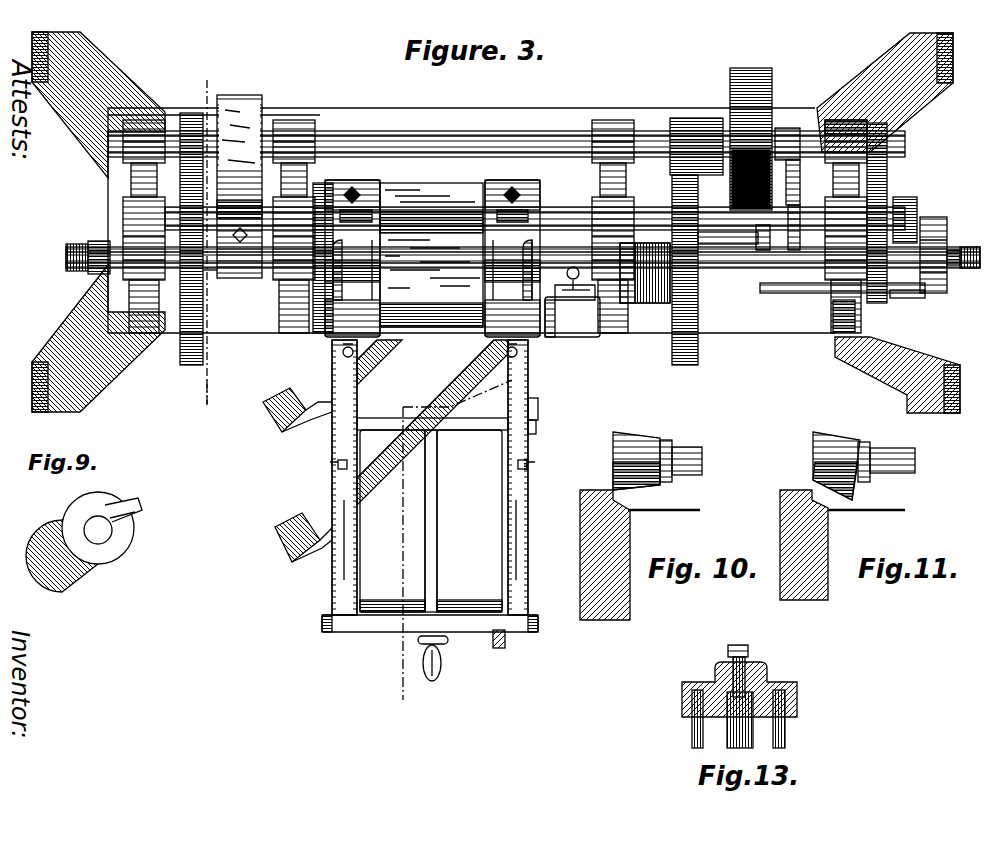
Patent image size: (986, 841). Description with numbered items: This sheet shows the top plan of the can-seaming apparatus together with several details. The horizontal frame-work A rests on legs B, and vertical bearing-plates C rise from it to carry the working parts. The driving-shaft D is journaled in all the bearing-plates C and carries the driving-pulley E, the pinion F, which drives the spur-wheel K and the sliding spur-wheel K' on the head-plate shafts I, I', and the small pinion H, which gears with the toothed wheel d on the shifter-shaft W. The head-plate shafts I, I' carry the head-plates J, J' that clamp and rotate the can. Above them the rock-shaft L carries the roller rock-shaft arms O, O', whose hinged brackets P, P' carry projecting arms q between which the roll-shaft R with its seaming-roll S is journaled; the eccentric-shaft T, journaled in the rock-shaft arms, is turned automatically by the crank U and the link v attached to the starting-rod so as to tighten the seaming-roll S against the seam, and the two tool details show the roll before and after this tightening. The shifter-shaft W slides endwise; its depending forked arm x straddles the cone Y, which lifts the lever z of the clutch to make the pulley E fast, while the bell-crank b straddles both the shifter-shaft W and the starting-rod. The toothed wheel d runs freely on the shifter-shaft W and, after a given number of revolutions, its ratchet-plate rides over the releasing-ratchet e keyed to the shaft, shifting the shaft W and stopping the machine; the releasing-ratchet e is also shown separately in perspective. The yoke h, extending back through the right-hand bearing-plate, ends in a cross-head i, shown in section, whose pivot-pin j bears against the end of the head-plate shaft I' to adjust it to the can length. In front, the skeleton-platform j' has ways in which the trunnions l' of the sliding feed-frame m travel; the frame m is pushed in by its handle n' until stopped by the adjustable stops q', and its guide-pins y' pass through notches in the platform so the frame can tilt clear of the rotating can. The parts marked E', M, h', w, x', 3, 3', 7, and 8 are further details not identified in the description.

In FIG. 3, the horizontal frame-work A is at (471, 219).
In FIG. 3, the legs B is at (92, 52).
In FIG. 3, the vertical bearing-plates C is at (495, 226).
In FIG. 3, the driving-shaft D is at (553, 142).
In FIG. 3, the driving-pulley E is at (751, 139).
In FIG. 3, the pulley / drum E' is at (696, 128).
In FIG. 3, the pinion F is at (194, 112).
In FIG. 3, the small pinion H is at (852, 130).
In FIG. 3, the head-plate shaft I is at (210, 284).
In FIG. 3, the head-plate shaft I' is at (734, 258).
In FIG. 13, the head-plate shaft I' is at (747, 726).
In FIG. 3, the head-plate J is at (352, 245).
In FIG. 10, the head-plate J is at (640, 544).
In FIG. 11, the head-plate J is at (842, 534).
In FIG. 3, the movable head-plate J' is at (519, 244).
In FIG. 3, the spur-wheel K is at (268, 258).
In FIG. 3, the spur-wheel K' is at (698, 270).
In FIG. 3, the rock-shaft L is at (431, 255).
In FIG. 3, the drum M is at (239, 186).
In FIG. 3, the roller rock-shaft arm O is at (356, 223).
In FIG. 3, the roller rock-shaft arm O' is at (512, 223).
In FIG. 3, the hinged bracket P is at (344, 270).
In FIG. 3, the hinged bracket P' is at (520, 270).
In FIG. 10, the roll-shaft R is at (704, 463).
In FIG. 11, the roll-shaft R is at (917, 462).
In FIG. 10, the seaming-roll S is at (642, 461).
In FIG. 11, the seaming-roll S is at (841, 466).
In FIG. 3, the eccentric-shaft T is at (430, 310).
In FIG. 3, the crank U is at (572, 317).
In FIG. 3, the shifter-shaft W is at (713, 216).
In FIG. 3, the cone Y is at (787, 182).
In FIG. 3, the bell-crank b is at (655, 262).
In FIG. 3, the toothed wheel d is at (888, 184).
In FIG. 3, the releasing-ratchet e is at (915, 208).
In FIG. 13, the yoke h is at (748, 719).
In FIG. 3, the lower shaft h' is at (523, 276).
In FIG. 3, the cross-head i is at (943, 283).
In FIG. 13, the cross-head i is at (778, 686).
In FIG. 13, the pivot-pin j is at (748, 661).
In FIG. 3, the skeleton-platform j' is at (429, 540).
In FIG. 3, the trunnions l' is at (540, 434).
In FIG. 3, the sliding feed-frame m is at (437, 507).
In FIG. 3, the handle n' is at (439, 658).
In FIG. 3, the projecting arm q is at (432, 422).
In FIG. 3, the adjustable stops q' is at (541, 411).
In FIG. 3, the link v is at (575, 295).
In FIG. 3, the pin w is at (576, 297).
In FIG. 3, the depending forked arm x is at (799, 213).
In FIG. 3, the pin x' is at (631, 456).
In FIG. 3, the guide-pins y' is at (436, 469).
In FIG. 3, the lever of clutch-eccentric z is at (787, 142).
In FIG. 3, the levers 3 is at (297, 475).
In FIG. 3, the lever pivots 3' is at (433, 477).
In FIG. 3, the section line 7 is at (205, 228).
In FIG. 3, the section line 8 is at (204, 397).